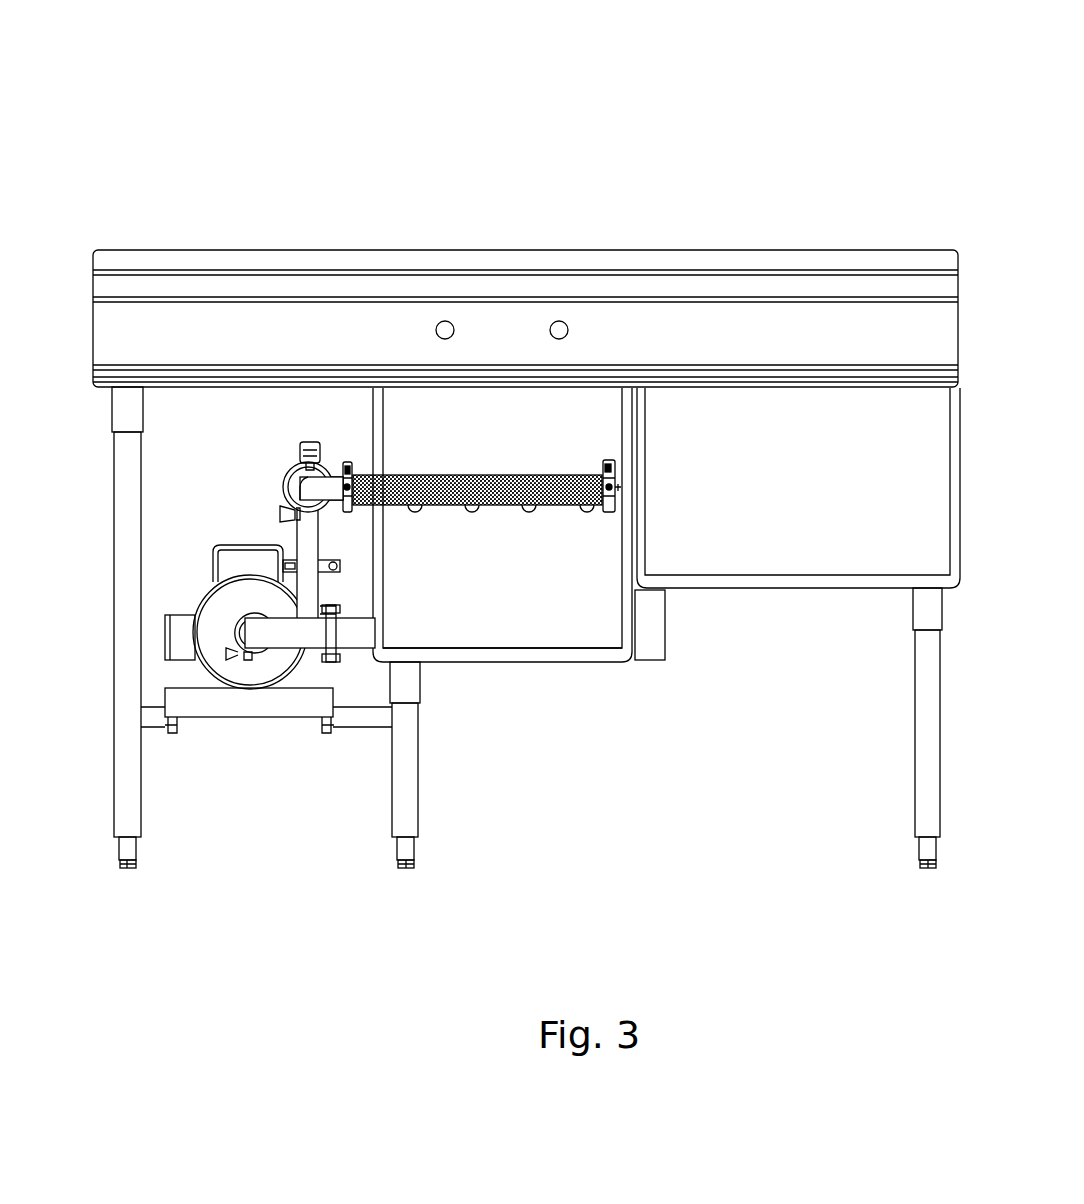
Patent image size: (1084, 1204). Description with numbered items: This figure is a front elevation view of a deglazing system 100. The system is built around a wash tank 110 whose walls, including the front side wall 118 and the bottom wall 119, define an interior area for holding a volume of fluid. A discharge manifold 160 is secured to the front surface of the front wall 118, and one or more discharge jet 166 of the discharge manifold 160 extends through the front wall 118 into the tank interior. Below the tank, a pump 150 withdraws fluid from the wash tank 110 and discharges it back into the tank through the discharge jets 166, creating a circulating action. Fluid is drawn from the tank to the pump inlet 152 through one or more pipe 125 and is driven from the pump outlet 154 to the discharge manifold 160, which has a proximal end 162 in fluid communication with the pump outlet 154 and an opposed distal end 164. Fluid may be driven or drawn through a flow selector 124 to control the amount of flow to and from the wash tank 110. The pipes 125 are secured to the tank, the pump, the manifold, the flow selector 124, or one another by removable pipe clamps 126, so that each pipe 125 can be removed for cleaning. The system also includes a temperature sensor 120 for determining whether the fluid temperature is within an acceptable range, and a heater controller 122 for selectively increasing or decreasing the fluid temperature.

The deglazing system 100 is at (609, 115).
The wash tank 110 is at (591, 402).
The front side wall 118 is at (523, 613).
The bottom wall 119 is at (597, 662).
The temperature sensor 120 is at (165, 637).
The heater controller 122 is at (667, 617).
The flow selector 124 is at (300, 448).
The pipe 125 is at (300, 485).
The removable pipe clamp 126 is at (345, 462).
The pump 150 is at (236, 520).
The pump inlet 152 is at (250, 640).
The pump outlet 154 is at (305, 645).
The discharge manifold 160 is at (500, 459).
The proximal end 162 is at (355, 475).
The distal end 164 is at (600, 520).
The discharge jet 166 is at (415, 512).